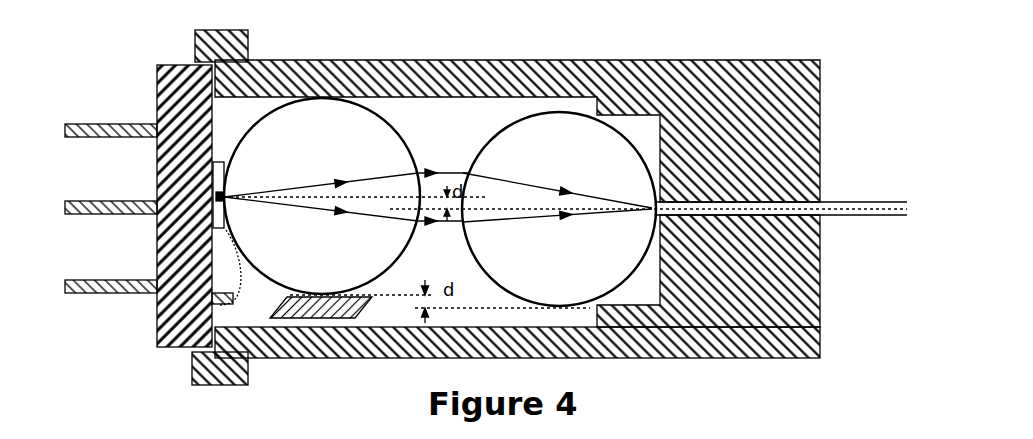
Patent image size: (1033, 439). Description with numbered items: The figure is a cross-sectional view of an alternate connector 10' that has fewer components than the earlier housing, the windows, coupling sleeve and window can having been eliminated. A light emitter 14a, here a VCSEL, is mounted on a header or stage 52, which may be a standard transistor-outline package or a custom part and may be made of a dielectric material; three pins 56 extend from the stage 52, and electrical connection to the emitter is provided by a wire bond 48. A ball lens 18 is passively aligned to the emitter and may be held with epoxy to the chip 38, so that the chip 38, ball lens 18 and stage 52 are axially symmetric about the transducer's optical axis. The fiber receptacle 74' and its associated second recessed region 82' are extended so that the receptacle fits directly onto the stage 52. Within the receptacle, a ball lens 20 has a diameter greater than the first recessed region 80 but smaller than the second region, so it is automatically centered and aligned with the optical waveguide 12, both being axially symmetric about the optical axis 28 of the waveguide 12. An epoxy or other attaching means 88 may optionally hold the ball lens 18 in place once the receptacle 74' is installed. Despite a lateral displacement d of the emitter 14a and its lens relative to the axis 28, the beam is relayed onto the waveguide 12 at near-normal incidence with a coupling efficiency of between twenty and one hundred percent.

The connector 10' is at (89, 51).
The optical waveguide 12 is at (836, 201).
The light emitter 14a is at (218, 195).
The ball lens 18 is at (334, 130).
The ball lens 20 is at (560, 145).
The optical axis 28 is at (851, 212).
The chip 38 is at (219, 164).
The wire bond 48 is at (238, 268).
The stage 52 is at (183, 68).
The pins 56 is at (92, 131).
The receptacle 74' is at (507, 111).
The first recessed region 80 is at (637, 288).
The second recessed region 82' is at (506, 373).
The attaching means 88 is at (327, 302).